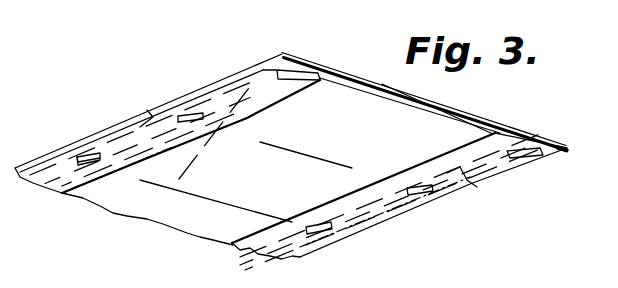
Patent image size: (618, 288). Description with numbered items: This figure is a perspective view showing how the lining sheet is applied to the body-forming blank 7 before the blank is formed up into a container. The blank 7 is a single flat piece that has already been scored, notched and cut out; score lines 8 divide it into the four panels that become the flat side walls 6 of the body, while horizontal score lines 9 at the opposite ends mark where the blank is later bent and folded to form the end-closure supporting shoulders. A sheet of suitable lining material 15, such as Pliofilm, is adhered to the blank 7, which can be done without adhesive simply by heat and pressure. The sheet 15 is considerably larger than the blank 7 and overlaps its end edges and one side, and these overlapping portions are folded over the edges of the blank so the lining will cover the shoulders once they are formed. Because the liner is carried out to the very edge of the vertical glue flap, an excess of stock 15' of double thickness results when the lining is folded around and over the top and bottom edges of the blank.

The side walls 6 is at (357, 112).
The blank 7 is at (482, 120).
The score lines 8 is at (436, 124).
The horizontal score lines 9 is at (143, 133).
The sheet of lining material 15 is at (577, 125).
The excess of stock 15' is at (424, 85).